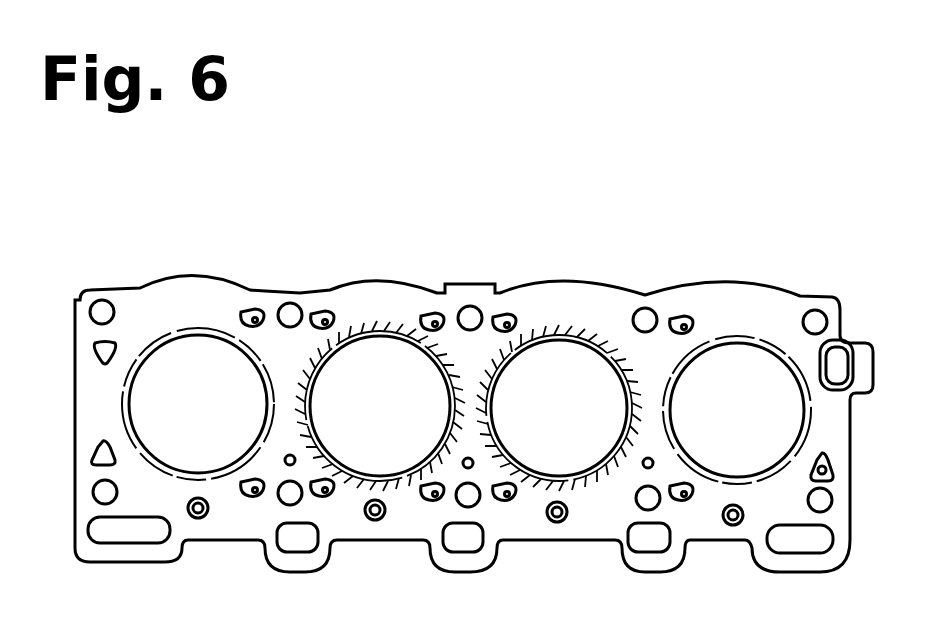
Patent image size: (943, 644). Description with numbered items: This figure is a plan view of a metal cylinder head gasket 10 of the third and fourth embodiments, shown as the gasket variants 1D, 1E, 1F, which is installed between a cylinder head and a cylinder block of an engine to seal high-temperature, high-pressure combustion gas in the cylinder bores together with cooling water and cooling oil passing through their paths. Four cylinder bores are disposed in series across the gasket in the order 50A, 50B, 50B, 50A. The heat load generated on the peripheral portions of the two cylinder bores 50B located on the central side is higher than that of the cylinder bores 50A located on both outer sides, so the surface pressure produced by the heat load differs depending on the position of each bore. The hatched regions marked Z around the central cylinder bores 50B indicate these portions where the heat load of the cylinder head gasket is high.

The cylinder head gasket 10 is at (378, 281).
The cylinder head gasket 1D is at (470, 347).
The cylinder head gasket 1E is at (470, 347).
The cylinder head gasket 1F is at (535, 259).
The cylinder bore 50A is at (770, 422).
The cylinder bore 50B is at (592, 420).
The zone with increased sealing bead Z is at (346, 340).